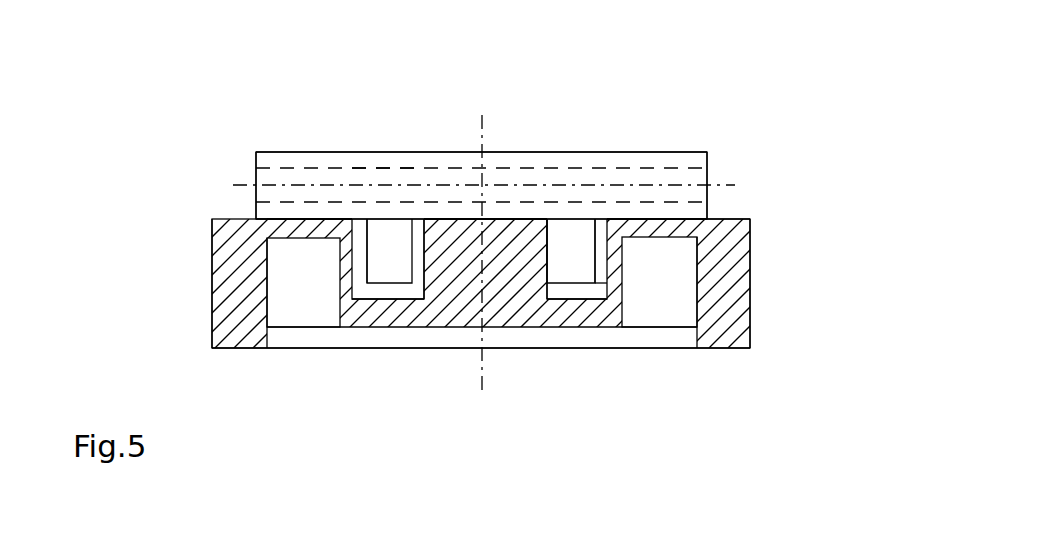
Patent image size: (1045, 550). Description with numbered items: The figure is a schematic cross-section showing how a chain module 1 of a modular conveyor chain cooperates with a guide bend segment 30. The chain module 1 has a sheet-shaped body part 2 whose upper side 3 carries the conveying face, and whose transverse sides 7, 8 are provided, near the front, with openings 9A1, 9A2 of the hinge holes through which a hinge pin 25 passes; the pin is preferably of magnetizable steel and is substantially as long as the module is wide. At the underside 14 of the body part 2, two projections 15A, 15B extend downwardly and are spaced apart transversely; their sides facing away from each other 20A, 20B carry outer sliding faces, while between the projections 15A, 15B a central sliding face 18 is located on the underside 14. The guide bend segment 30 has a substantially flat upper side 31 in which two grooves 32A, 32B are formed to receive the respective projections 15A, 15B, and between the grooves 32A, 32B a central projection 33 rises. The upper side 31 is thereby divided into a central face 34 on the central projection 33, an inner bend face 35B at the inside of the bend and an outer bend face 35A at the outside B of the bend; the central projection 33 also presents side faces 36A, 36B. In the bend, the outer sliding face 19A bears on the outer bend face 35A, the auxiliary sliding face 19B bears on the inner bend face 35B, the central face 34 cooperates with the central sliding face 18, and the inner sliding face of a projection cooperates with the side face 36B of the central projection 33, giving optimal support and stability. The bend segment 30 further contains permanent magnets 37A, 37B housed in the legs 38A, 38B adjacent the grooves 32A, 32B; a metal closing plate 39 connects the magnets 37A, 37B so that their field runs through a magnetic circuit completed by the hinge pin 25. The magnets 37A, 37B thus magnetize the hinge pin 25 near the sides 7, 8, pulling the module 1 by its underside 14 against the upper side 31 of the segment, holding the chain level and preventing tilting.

The chain module 1 is at (232, 97).
The sheet-shaped body part 2 is at (707, 155).
The upper side 3 is at (465, 148).
The side 7 is at (708, 158).
The side 8 is at (255, 210).
The opening 9A1 is at (255, 195).
The opening 9A2 is at (708, 183).
The underside 14 is at (505, 218).
The central sliding face 18 is at (513, 218).
The outer sliding face 19A is at (668, 218).
The auxiliary sliding face 19B is at (290, 222).
The hinge pin 25 is at (328, 220).
The central face 34 is at (462, 218).
The outer bend face 35A is at (653, 218).
The inner bend face 35B is at (295, 219).
The side face of central projection 36A is at (592, 292).
The side face of central projection 36B is at (390, 177).
The outside of the bend B is at (638, 136).
The guide bend segment 30 is at (421, 295).
The upper side 31 is at (742, 218).
The leg 38A is at (233, 287).
The leg 38B is at (728, 305).
The metal closing plate 39 is at (403, 335).
The magnet 37A is at (660, 273).
The magnet 37B is at (280, 273).
The projection 15A is at (573, 270).
The projection 15B is at (392, 253).
The side facing away 20A is at (618, 277).
The side facing away 20B is at (367, 253).
The groove 32A is at (640, 327).
The groove 32B is at (388, 292).
The central projection 33 is at (510, 267).